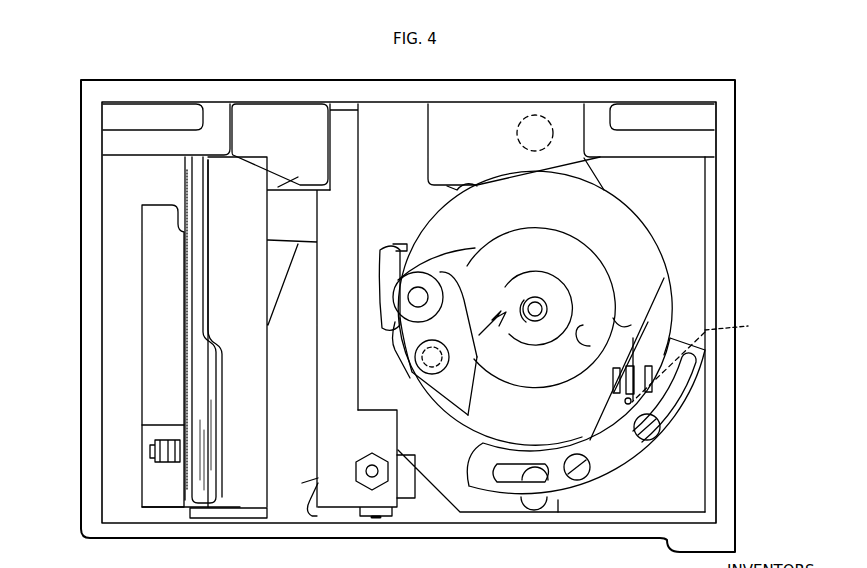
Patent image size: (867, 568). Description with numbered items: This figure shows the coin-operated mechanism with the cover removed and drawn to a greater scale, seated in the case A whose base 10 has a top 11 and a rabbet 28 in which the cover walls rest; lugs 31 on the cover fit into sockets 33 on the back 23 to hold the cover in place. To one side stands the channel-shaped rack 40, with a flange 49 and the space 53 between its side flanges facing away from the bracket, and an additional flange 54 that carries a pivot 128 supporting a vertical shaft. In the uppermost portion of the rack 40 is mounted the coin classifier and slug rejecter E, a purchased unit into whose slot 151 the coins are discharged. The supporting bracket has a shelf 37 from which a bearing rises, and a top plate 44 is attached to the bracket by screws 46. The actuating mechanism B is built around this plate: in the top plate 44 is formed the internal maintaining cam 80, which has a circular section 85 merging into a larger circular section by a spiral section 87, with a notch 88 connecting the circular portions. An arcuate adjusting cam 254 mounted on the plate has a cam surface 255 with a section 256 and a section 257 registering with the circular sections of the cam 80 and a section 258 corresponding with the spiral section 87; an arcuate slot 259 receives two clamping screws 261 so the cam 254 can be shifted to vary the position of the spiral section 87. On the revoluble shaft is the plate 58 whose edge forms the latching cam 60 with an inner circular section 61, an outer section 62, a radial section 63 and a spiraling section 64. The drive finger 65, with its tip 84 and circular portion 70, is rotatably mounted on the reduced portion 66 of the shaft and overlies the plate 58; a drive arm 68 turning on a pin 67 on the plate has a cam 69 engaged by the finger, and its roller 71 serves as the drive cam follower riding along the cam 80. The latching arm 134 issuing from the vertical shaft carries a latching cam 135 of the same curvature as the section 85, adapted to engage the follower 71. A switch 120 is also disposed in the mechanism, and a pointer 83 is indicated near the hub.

The base 10 is at (78, 533).
The case A is at (79, 80).
The coin classifier and slug rejecter E is at (172, 494).
The slot 151 is at (200, 447).
The flange 49 is at (283, 518).
The space 53 is at (299, 500).
The lugs 31 is at (145, 110).
The sockets 33 is at (115, 143).
The back 23 is at (523, 89).
The circular section 85 is at (457, 186).
The top plate 44 is at (692, 192).
The rabbet 28 is at (725, 240).
The channel-shaped rack 40 is at (340, 397).
The flange 54 is at (331, 381).
The pivot 128 is at (372, 465).
The top 11 is at (430, 513).
The latching arm 134 is at (388, 276).
The latching cam 135 is at (392, 253).
The notch 88 is at (398, 249).
The shelf 37 is at (646, 263).
The plate 58 is at (583, 277).
The latching cam 60 is at (571, 249).
The spiraling section 64 is at (528, 230).
The internal cam 80 is at (571, 177).
The drive finger 65 is at (512, 279).
The tip 84 is at (488, 263).
The reduced portion 66 is at (534, 321).
The pointer 83 is at (491, 332).
The circular portion 70 is at (588, 334).
The circular section 61 is at (624, 313).
The actuating mechanism B is at (606, 292).
The spiral section 87 is at (702, 359).
The roller 71 is at (428, 273).
The drive arm 68 is at (447, 254).
The cam 69 is at (457, 270).
The pin 67 is at (445, 345).
The outwardly disposed section 62 is at (452, 396).
The radial section 63 is at (470, 388).
The adjusting cam 254 is at (648, 448).
The switch 120 is at (640, 372).
The section 256 is at (648, 396).
The clamping screws 261 is at (652, 430).
The arcuate slot 259 is at (646, 447).
The section 257 is at (563, 450).
The section 258 is at (630, 413).
The screws 46 is at (528, 475).
The cam surface 255 is at (504, 450).